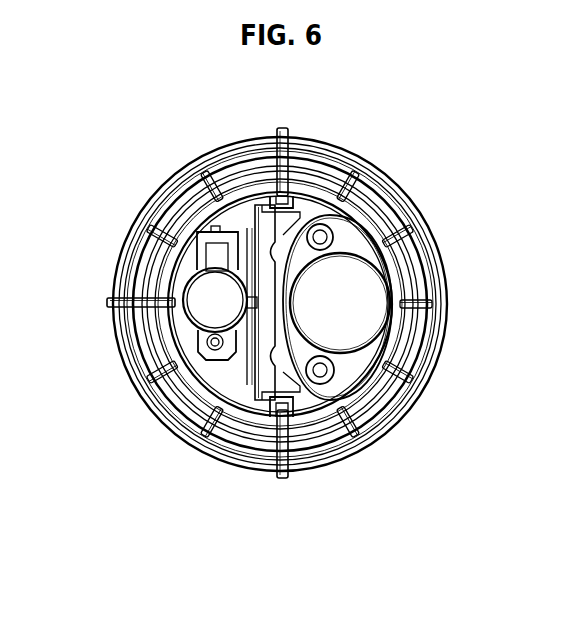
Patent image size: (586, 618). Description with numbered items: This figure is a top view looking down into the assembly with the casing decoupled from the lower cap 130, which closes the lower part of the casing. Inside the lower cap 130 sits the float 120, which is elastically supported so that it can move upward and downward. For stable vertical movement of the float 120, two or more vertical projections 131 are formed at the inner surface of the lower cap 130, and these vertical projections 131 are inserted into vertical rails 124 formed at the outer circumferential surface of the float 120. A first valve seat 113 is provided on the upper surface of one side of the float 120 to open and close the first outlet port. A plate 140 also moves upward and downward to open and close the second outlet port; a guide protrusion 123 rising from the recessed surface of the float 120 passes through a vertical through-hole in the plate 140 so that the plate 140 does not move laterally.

The first valve seat 113 is at (204, 300).
The float 120 is at (233, 377).
The guide protrusion 123 is at (323, 374).
The vertical rail 124 is at (296, 198).
The lower cap 130 is at (140, 387).
The vertical projection 131 is at (283, 440).
The plate 140 is at (345, 362).